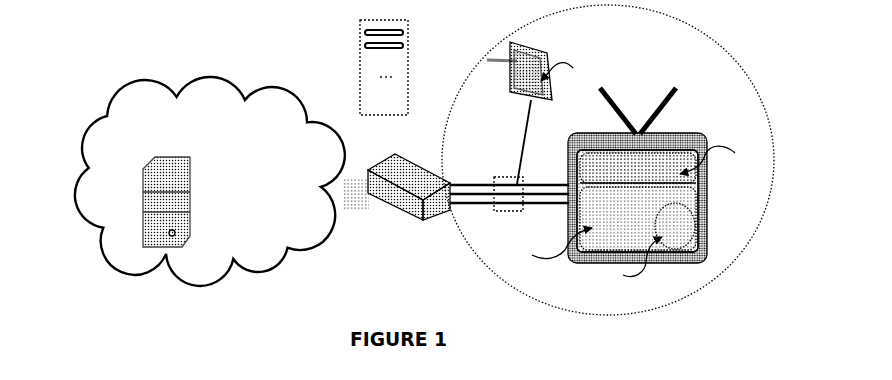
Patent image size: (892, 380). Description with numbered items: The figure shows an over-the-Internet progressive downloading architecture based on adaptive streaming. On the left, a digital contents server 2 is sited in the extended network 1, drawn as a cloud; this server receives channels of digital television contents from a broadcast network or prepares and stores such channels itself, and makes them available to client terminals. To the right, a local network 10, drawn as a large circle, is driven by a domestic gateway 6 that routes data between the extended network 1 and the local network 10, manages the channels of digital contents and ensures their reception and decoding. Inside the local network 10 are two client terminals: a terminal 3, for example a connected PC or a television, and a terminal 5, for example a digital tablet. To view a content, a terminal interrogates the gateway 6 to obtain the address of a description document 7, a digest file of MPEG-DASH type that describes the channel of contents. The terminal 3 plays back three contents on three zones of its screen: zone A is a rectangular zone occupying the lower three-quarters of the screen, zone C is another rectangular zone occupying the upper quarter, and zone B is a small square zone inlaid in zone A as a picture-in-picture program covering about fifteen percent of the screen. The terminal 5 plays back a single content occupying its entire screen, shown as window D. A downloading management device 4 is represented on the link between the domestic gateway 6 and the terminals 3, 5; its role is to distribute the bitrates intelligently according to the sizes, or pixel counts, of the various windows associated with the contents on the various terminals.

The extended network 1 is at (207, 76).
The digital contents server 2 is at (188, 157).
The terminal 3 is at (622, 107).
The downloading management device 4 is at (487, 176).
The terminal 5 is at (550, 33).
The domestic gateway 6 is at (417, 161).
The description document 7 is at (408, 42).
The local network 10 is at (500, 274).
The zone A is at (553, 243).
The zone B is at (633, 262).
The zone C is at (716, 160).
The window D is at (566, 71).